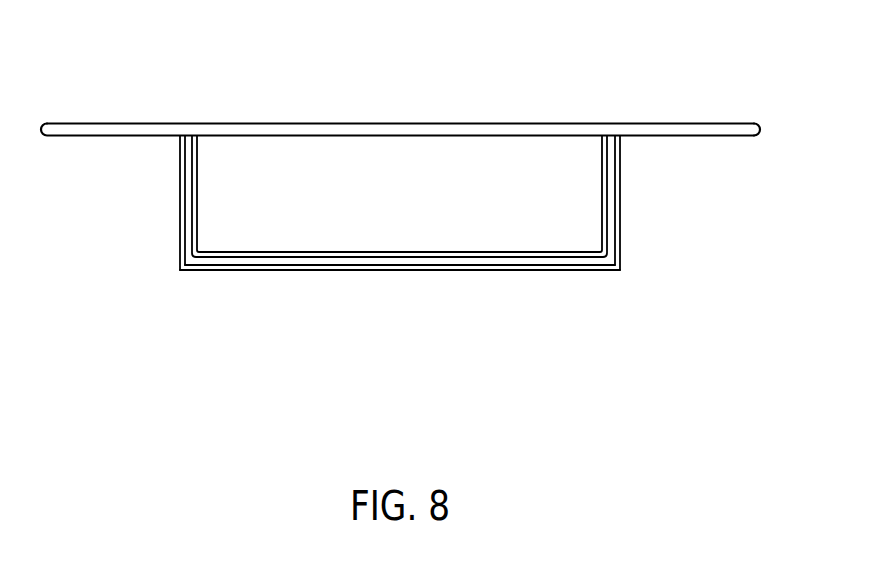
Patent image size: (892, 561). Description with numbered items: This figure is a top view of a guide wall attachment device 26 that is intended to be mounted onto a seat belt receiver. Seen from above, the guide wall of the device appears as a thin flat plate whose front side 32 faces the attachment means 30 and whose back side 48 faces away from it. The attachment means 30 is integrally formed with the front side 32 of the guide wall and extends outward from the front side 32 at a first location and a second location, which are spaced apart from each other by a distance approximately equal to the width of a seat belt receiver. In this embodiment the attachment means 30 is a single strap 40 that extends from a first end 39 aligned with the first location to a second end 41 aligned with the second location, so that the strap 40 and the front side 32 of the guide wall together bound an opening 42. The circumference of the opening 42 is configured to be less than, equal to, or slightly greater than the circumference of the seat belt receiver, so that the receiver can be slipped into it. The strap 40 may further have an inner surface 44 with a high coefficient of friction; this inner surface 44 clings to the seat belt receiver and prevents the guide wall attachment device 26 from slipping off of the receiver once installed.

The guide wall attachment device 26 is at (675, 122).
The back side 48 is at (403, 123).
The front side 32 is at (737, 138).
The attachment means 30 is at (394, 245).
The first end 39 is at (182, 140).
The second end 41 is at (610, 137).
The strap 40 is at (240, 273).
The opening 42 is at (472, 217).
The inner surface 44 is at (267, 252).